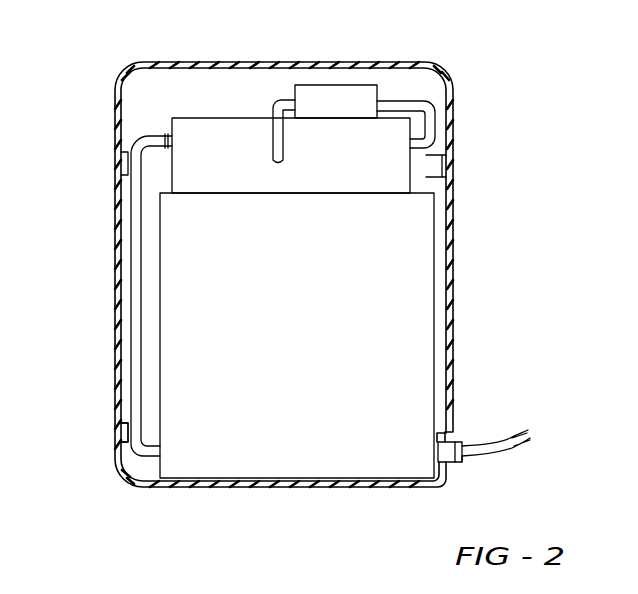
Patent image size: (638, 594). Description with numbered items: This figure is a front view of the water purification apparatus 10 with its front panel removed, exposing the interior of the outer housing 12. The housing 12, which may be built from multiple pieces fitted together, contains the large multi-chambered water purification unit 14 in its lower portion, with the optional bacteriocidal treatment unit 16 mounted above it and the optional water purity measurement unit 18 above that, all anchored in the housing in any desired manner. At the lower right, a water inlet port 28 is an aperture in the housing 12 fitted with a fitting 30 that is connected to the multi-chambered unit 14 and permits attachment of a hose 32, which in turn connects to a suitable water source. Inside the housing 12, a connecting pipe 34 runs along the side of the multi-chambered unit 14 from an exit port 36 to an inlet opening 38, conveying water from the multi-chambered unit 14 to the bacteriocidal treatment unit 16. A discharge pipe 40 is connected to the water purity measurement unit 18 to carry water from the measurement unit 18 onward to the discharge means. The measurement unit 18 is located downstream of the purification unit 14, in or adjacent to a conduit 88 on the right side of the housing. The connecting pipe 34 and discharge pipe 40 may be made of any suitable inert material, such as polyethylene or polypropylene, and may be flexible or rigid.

The apparatus 10 is at (520, 46).
The outer housing 12 is at (453, 212).
The multi-chambered water purification unit 14 is at (322, 317).
The bacteriocidal treatment unit 16 is at (352, 165).
The water purity measurement unit 18 is at (342, 112).
The water inlet port 28 is at (462, 436).
The fitting 30 is at (463, 462).
The hose 32 is at (512, 442).
The connecting pipe 34 is at (131, 290).
The exit port 36 is at (127, 449).
The inlet opening 38 is at (140, 138).
The discharge pipe 40 is at (272, 146).
The conduit 88 is at (437, 110).